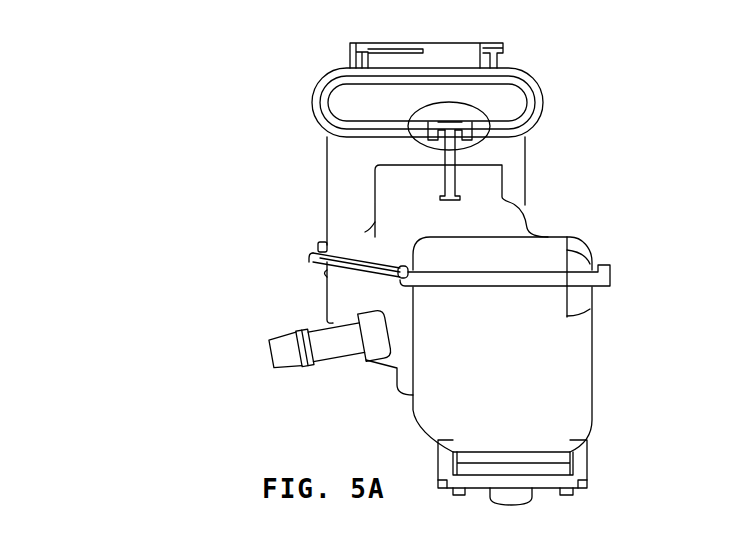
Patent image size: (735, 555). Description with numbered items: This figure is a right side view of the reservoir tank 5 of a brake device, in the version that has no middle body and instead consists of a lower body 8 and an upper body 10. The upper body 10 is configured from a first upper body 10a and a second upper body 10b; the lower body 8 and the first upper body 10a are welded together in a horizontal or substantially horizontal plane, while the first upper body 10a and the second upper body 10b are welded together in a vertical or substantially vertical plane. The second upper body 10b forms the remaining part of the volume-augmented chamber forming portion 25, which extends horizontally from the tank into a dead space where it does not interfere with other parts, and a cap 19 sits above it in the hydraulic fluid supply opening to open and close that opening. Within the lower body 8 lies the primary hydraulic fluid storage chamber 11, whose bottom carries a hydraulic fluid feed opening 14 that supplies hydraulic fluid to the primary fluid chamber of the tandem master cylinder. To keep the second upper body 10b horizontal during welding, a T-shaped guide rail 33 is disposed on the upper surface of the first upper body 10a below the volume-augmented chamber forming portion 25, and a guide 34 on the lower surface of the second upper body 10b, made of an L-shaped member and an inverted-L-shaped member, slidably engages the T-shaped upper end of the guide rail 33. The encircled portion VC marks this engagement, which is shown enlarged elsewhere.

The reservoir tank 5 is at (322, 202).
The lower body 8 is at (338, 293).
The upper body 10 is at (242, 104).
The first upper body 10a is at (327, 170).
The second upper body 10b is at (312, 99).
The primary hydraulic fluid storage chamber 11 is at (571, 370).
The hydraulic fluid feed opening 14 is at (522, 495).
The cap 19 is at (497, 43).
The volume-augmented chamber forming portion 25 is at (523, 80).
The T-shaped guide rail 33 is at (445, 192).
The guide 34 is at (430, 141).
The portion VC is at (485, 143).